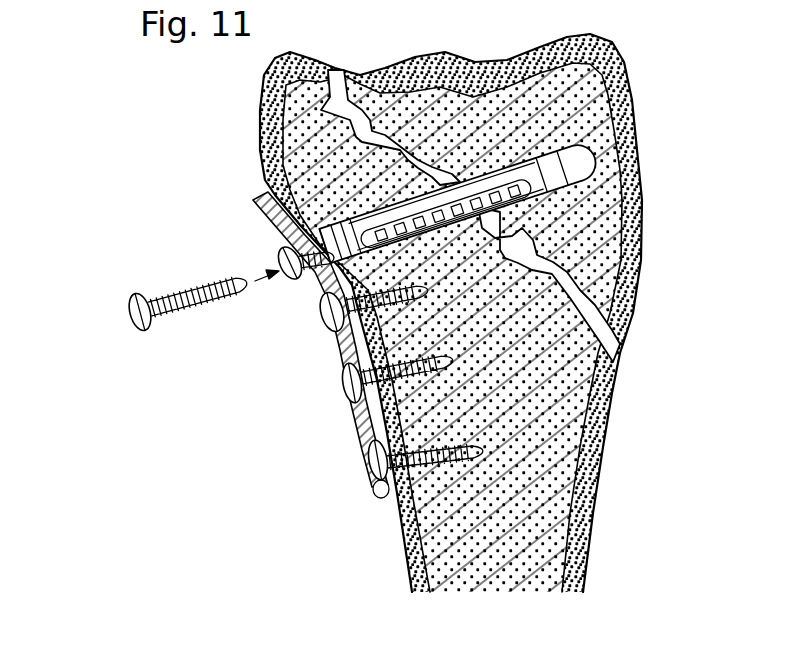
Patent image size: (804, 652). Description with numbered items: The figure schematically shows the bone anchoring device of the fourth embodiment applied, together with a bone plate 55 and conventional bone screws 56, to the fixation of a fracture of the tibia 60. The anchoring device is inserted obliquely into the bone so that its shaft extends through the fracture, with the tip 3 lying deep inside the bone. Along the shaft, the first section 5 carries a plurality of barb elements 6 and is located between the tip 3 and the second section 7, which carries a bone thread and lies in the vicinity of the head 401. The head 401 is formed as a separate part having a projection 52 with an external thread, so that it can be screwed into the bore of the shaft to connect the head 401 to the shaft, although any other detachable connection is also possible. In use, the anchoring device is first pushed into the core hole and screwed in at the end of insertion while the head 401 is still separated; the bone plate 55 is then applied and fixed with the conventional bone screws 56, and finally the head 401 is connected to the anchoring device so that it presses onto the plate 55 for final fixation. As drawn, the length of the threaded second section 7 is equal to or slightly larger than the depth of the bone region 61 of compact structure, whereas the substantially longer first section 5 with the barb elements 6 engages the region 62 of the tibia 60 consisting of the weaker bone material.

The tip 3 is at (598, 174).
The first section 5 is at (552, 147).
The barb elements 6 is at (527, 217).
The second section 7 is at (345, 273).
The head 401 is at (285, 258).
The projection 52 is at (195, 312).
The bone plate 55 is at (363, 420).
The conventional bone screws 56 is at (383, 462).
The tibia 60 is at (615, 446).
The bone region of compact structure 61 is at (590, 513).
The bone region of weaker bone material 62 is at (557, 383).